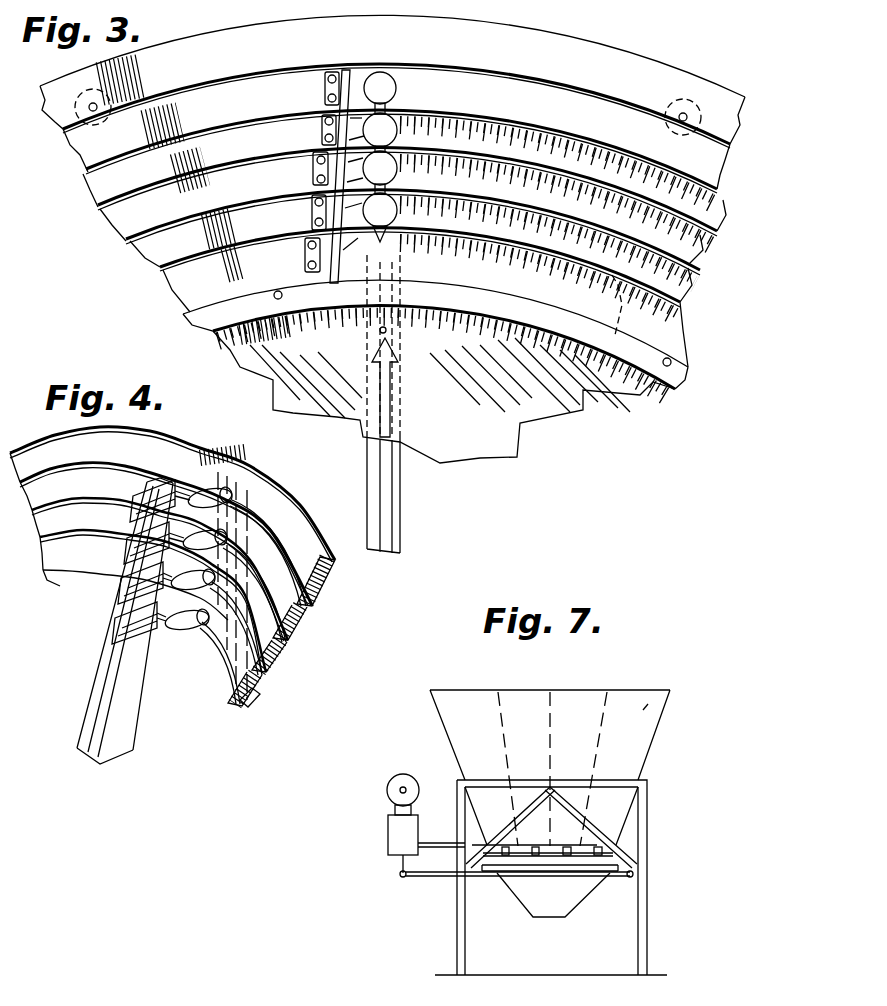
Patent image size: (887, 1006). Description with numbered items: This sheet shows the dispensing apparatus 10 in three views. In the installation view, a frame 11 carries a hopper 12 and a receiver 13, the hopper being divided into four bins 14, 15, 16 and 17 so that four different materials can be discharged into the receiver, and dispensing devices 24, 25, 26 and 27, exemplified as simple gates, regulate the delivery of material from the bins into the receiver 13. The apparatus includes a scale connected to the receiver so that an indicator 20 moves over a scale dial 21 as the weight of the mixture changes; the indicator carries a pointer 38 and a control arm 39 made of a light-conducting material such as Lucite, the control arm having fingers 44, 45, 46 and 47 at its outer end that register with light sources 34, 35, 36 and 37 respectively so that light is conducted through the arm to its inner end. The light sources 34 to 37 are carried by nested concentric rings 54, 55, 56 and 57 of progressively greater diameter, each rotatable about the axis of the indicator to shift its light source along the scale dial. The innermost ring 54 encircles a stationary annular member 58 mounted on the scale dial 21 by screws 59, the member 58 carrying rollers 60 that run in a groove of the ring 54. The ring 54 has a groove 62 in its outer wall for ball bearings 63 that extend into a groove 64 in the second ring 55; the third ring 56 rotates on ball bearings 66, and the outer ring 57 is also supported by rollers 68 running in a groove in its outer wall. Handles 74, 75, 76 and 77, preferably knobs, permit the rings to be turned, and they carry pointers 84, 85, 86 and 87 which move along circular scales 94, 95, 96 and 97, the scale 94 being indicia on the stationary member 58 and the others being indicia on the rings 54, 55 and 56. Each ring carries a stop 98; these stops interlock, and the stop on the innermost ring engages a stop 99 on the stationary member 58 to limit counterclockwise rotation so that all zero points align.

In FIG. 7, the dispensing apparatus 10 is at (383, 848).
In FIG. 7, the frame 11 is at (658, 828).
In FIG. 7, the hopper 12 is at (668, 727).
In FIG. 7, the receiver 13 is at (583, 905).
In FIG. 7, the storage compartment 14 is at (468, 707).
In FIG. 7, the storage compartment 15 is at (520, 710).
In FIG. 7, the storage compartment 16 is at (583, 702).
In FIG. 7, the storage compartment 17 is at (643, 710).
In FIG. 3, the indicator 20 is at (410, 528).
In FIG. 3, the scale dial 21 is at (565, 415).
In FIG. 7, the dispensing device 24 is at (503, 856).
In FIG. 7, the dispensing device 25 is at (535, 856).
In FIG. 7, the dispensing device 26 is at (565, 856).
In FIG. 7, the dispensing device 27 is at (597, 856).
In FIG. 4, the light source 34 is at (182, 632).
In FIG. 4, the light source 35 is at (200, 588).
In FIG. 4, the light source 36 is at (212, 548).
In FIG. 4, the light source 37 is at (236, 496).
In FIG. 3, the pointer 38 is at (380, 360).
In FIG. 3, the control arm 39 is at (403, 478).
In FIG. 4, the control arm 39 is at (130, 740).
In FIG. 4, the finger 44 is at (143, 628).
In FIG. 4, the finger 45 is at (146, 588).
In FIG. 4, the finger 46 is at (150, 548).
In FIG. 4, the finger 47 is at (147, 486).
In FIG. 3, the ring 54 is at (148, 262).
In FIG. 4, the ring 54 is at (255, 708).
In FIG. 3, the ring 55 is at (122, 232).
In FIG. 4, the ring 55 is at (278, 676).
In FIG. 3, the ring 56 is at (95, 200).
In FIG. 4, the ring 56 is at (300, 645).
In FIG. 3, the ring 57 is at (85, 160).
In FIG. 4, the ring 57 is at (330, 585).
In FIG. 3, the stationary annular member 58 is at (183, 308).
In FIG. 3, the screw 59 is at (278, 300).
In FIG. 3, the roller 60 is at (621, 314).
In FIG. 4, the groove 62 is at (240, 700).
In FIG. 3, the ball bearing 63 is at (717, 233).
In FIG. 4, the groove 64 is at (262, 700).
In FIG. 3, the ball bearing 66 is at (717, 186).
In FIG. 3, the roller 68 is at (690, 120).
In FIG. 3, the handle 74 is at (352, 248).
In FIG. 3, the handle 75 is at (357, 179).
In FIG. 3, the handle 76 is at (359, 141).
In FIG. 3, the handle 77 is at (390, 74).
In FIG. 3, the pointer 84 is at (372, 228).
In FIG. 3, the pointer 85 is at (355, 209).
In FIG. 3, the pointer 86 is at (358, 161).
In FIG. 3, the pointer 87 is at (361, 123).
In FIG. 3, the circular scale 94 is at (685, 335).
In FIG. 3, the circular scale 95 is at (697, 288).
In FIG. 3, the circular scale 96 is at (708, 249).
In FIG. 3, the circular scale 97 is at (728, 216).
In FIG. 3, the stop 98 is at (325, 90).
In FIG. 3, the stop 99 is at (305, 255).